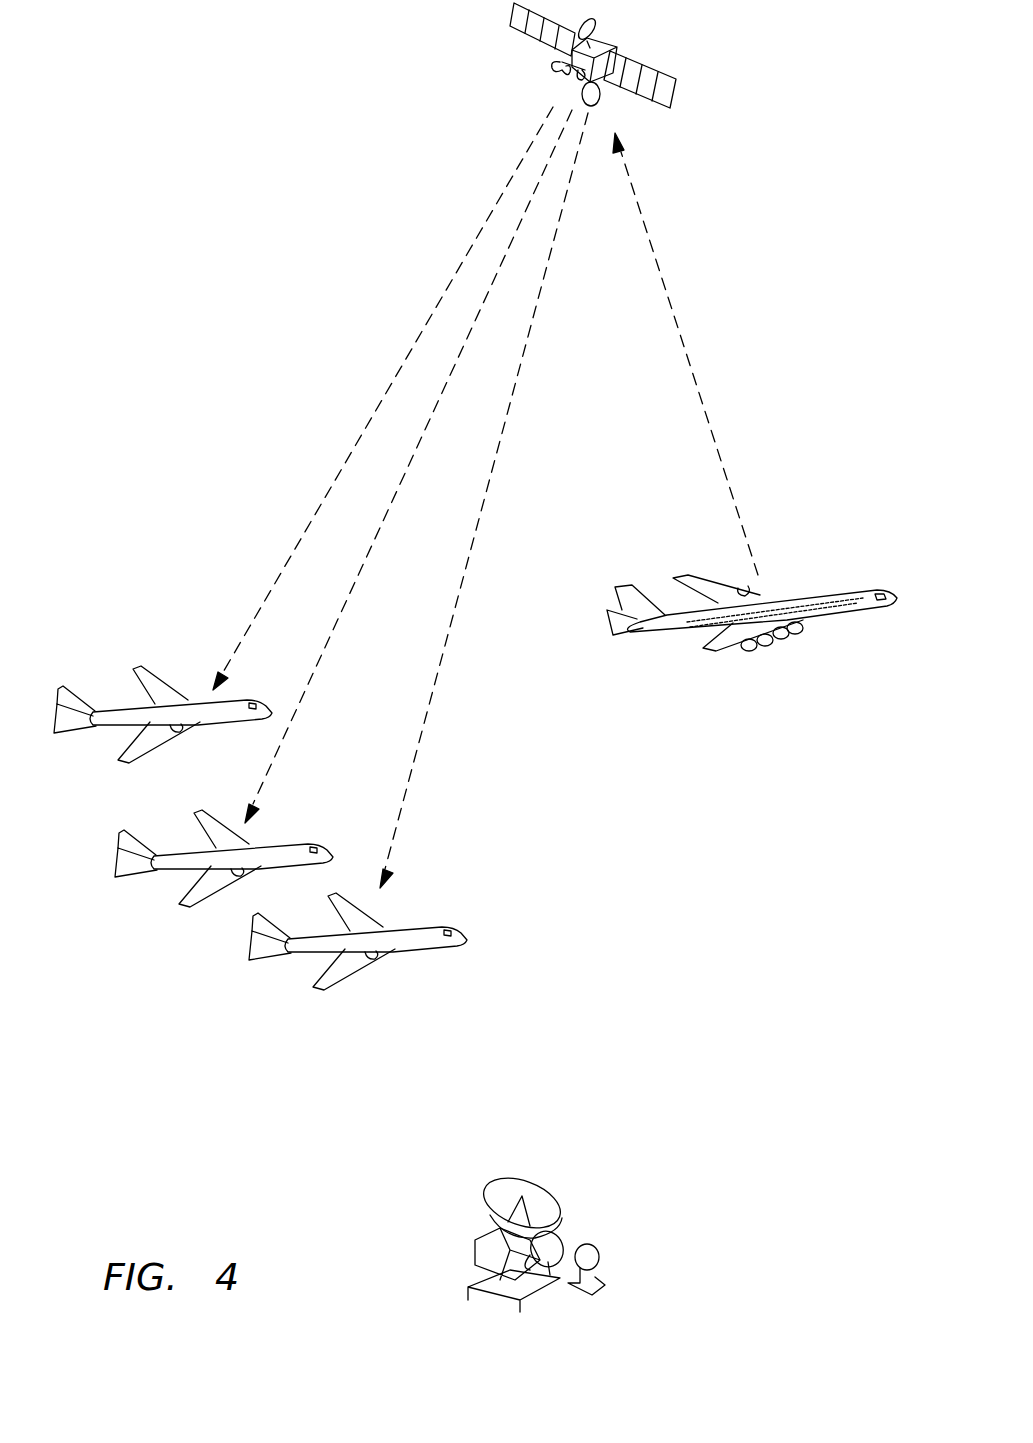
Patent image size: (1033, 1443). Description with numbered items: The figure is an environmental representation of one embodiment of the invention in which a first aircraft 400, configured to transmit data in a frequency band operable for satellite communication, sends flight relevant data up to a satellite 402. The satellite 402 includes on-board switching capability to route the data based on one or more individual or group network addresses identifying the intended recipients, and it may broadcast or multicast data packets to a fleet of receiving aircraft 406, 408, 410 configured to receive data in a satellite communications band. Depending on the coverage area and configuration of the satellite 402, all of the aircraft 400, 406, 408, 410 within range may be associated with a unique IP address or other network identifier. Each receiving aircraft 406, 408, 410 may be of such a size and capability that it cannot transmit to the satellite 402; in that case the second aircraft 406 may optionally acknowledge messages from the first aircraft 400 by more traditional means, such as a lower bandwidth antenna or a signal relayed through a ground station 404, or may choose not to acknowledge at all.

The first aircraft 400 is at (822, 596).
The satellite 402 is at (510, 8).
The ground station 404 is at (505, 1182).
The second aircraft 406 is at (150, 668).
The receiving aircraft 408 is at (195, 905).
The receiving aircraft 410 is at (345, 975).